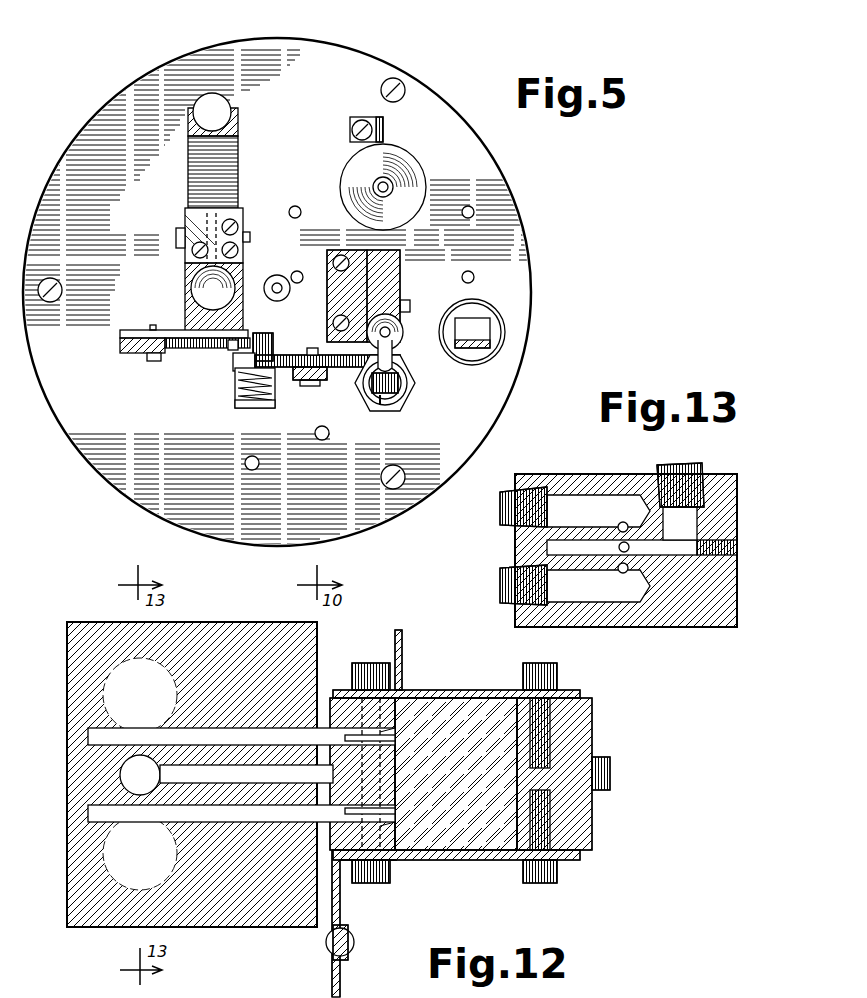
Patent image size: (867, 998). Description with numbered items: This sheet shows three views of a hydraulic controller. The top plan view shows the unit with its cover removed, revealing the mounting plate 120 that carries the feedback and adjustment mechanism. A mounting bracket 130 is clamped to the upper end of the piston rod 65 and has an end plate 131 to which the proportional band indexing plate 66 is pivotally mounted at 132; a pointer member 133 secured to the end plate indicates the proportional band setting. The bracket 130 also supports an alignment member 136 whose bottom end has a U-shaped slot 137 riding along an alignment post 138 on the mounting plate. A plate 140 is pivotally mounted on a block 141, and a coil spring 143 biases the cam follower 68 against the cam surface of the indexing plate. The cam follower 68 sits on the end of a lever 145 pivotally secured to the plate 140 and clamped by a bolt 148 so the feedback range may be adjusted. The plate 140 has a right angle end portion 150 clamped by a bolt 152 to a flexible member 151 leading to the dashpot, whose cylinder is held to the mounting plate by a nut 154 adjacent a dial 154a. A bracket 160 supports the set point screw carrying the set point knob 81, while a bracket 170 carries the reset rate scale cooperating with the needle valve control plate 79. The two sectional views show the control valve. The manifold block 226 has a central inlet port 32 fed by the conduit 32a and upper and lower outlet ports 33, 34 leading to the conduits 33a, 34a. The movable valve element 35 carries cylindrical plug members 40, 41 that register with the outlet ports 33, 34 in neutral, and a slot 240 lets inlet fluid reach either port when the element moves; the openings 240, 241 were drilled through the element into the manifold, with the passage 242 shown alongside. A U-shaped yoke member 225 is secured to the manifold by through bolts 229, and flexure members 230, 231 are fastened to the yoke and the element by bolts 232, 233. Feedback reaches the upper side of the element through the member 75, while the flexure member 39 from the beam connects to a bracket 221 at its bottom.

In FIG. 5, the mounting plate 120 is at (545, 202).
In FIG. 5, the alignment post 138 is at (224, 98).
In FIG. 5, the U-shaped slot 137 is at (232, 120).
In FIG. 5, the alignment member 136 is at (230, 172).
In FIG. 5, the mounting bracket 130 is at (188, 300).
In FIG. 5, the piston rod 65 is at (200, 280).
In FIG. 5, the end plate 131 is at (140, 322).
In FIG. 5, the proportional band indexing plate 66 is at (170, 350).
In FIG. 5, the pointer member 133 is at (165, 368).
In FIG. 5, the pivot 132 is at (235, 352).
In FIG. 5, the cam follower 68 is at (268, 338).
In FIG. 5, the lever 145 is at (290, 355).
In FIG. 5, the plate 140 is at (315, 372).
In FIG. 5, the bolt 148 is at (305, 386).
In FIG. 5, the coil spring 143 is at (238, 388).
In FIG. 5, the block 141 is at (258, 410).
In FIG. 5, the bracket 160 is at (382, 258).
In FIG. 5, the set point knob 81 is at (395, 325).
In FIG. 5, the dial 154a is at (470, 325).
In FIG. 5, the nut 154 is at (405, 395).
In FIG. 5, the bolt 152 is at (398, 383).
In FIG. 5, the flexible member 151 is at (392, 360).
In FIG. 5, the right angle end portion 150 is at (380, 405).
In FIG. 5, the needle valve control plate 79 is at (395, 175).
In FIG. 5, the bracket 170 is at (370, 120).
In FIG. 13, the manifold block 226 is at (705, 612).
In FIG. 12, the manifold block 226 is at (115, 925).
In FIG. 13, the upper outlet port 33 is at (625, 520).
In FIG. 12, the upper outlet port 33 is at (262, 720).
In FIG. 13, the lower outlet port 34 is at (628, 568).
In FIG. 12, the lower outlet port 34 is at (270, 815).
In FIG. 13, the inlet port 32 is at (619, 545).
In FIG. 12, the inlet port 32 is at (258, 757).
In FIG. 13, the conduit 32a is at (690, 465).
In FIG. 13, the outlet conduit 33a is at (505, 490).
In FIG. 13, the lower rod end 34a is at (505, 603).
In FIG. 12, the slot 240 is at (345, 775).
In FIG. 12, the movable valve element 35 is at (385, 778).
In FIG. 12, the U-shaped yoke member 225 is at (580, 735).
In FIG. 12, the flexure member 230 is at (455, 690).
In FIG. 12, the flexure member 231 is at (455, 850).
In FIG. 12, the bolt 233 is at (370, 670).
In FIG. 12, the bolt 232 is at (555, 675).
In FIG. 12, the member 75 is at (402, 648).
In FIG. 12, the through bolt 229 is at (610, 768).
In FIG. 12, the bracket 221 is at (340, 905).
In FIG. 12, the flexure member 39 is at (345, 975).
In FIG. 12, the passage 242 is at (395, 728).
In FIG. 12, the plug member 40 is at (395, 740).
In FIG. 12, the plug member 41 is at (395, 812).
In FIG. 12, the opening 241 is at (395, 825).